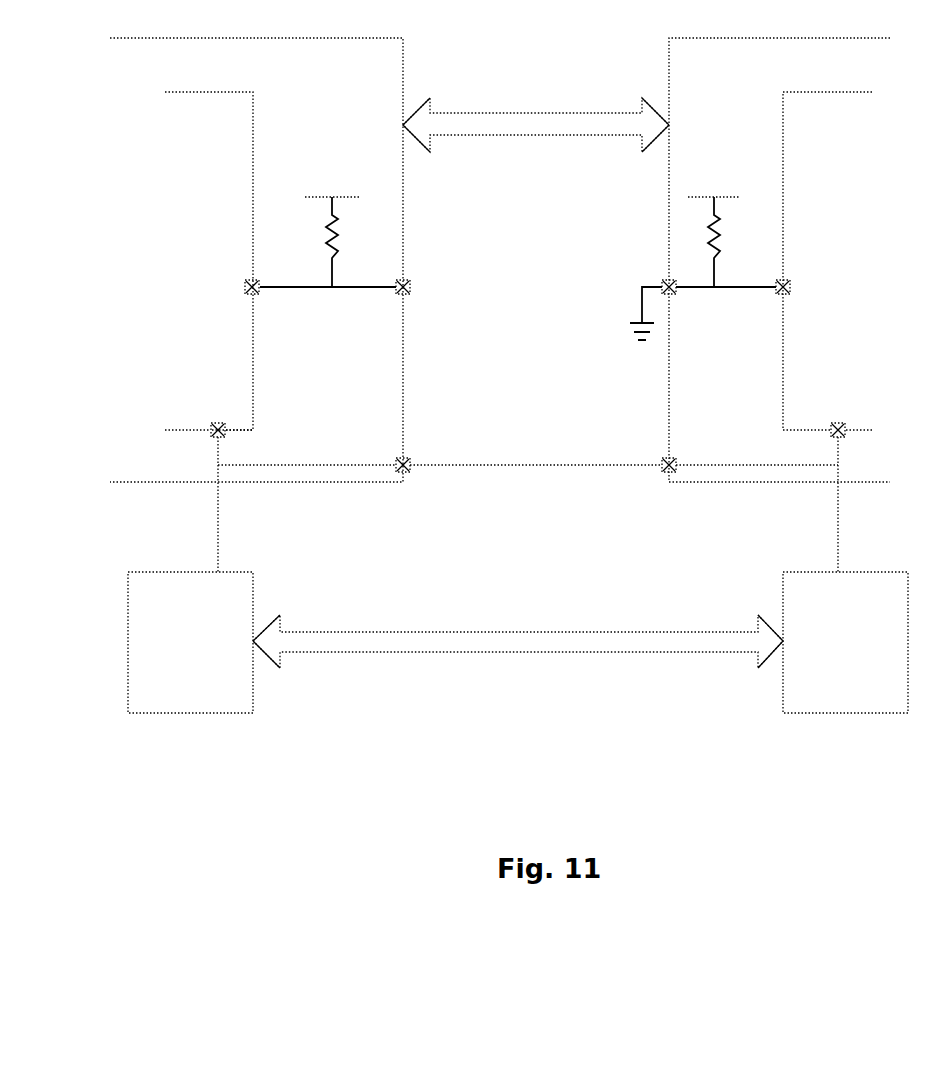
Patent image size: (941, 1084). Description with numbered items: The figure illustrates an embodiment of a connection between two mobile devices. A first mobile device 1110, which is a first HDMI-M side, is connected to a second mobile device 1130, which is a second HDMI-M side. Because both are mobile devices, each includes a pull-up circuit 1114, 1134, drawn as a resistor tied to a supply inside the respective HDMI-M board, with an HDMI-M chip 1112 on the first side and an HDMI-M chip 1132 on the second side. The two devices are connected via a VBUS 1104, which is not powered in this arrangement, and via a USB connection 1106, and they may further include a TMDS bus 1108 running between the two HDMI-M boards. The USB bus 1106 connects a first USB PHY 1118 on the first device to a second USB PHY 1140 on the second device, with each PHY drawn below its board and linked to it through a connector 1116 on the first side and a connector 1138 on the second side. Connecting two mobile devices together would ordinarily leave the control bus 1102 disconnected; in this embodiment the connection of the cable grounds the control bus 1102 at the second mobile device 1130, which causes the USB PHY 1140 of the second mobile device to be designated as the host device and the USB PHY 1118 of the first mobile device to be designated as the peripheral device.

The control bus 1102 is at (499, 307).
The VBUS 1104 is at (528, 473).
The USB connection 1106 is at (518, 654).
The TMDS bus 1108 is at (536, 115).
The first mobile device 1110 is at (256, 260).
The HDMI-M chip (left) 1112 is at (209, 261).
The pull-up circuit 1114 is at (316, 220).
The connector (left) 1116 is at (209, 476).
The first USB PHY 1118 is at (190, 642).
The second mobile device 1130 is at (779, 260).
The HDMI-M chip (right) 1132 is at (827, 261).
The pull-up circuit 1134 is at (726, 226).
The connector (right) 1138 is at (840, 481).
The second USB PHY 1140 is at (845, 642).